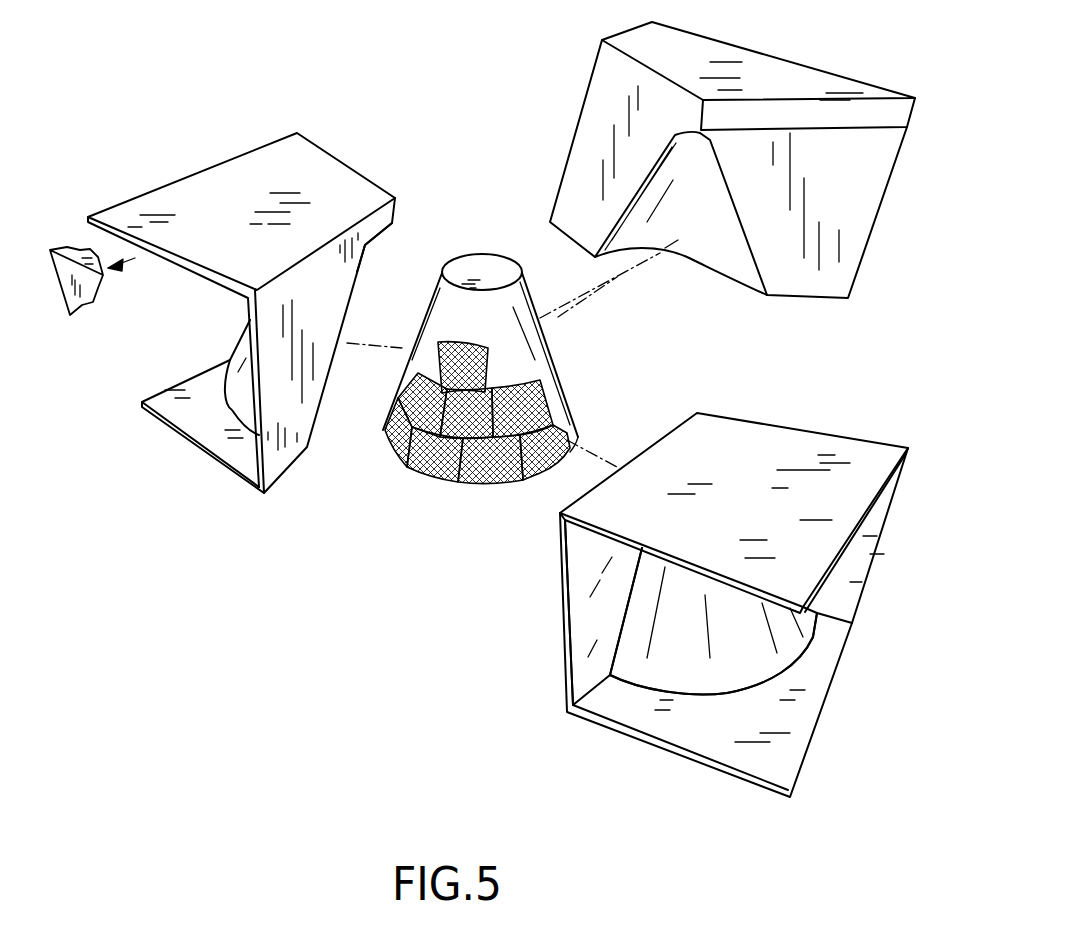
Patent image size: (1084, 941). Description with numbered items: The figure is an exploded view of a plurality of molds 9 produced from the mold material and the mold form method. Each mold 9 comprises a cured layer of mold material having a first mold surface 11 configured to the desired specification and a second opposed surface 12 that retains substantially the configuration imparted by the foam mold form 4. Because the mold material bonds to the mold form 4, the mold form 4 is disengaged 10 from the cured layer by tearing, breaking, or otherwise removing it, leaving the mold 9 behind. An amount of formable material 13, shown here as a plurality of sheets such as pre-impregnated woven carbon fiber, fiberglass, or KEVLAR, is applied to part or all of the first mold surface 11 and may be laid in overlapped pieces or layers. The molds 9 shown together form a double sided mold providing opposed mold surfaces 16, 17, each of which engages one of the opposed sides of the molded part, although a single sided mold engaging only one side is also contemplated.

The mold 9 is at (288, 132).
The mold form 4 is at (82, 307).
The disengagement of mold form 10 is at (135, 258).
The first mold surface 11 is at (420, 357).
The second opposed surface 12 is at (598, 630).
The formable material 13 is at (390, 450).
The opposed mold surface 16 is at (362, 267).
The opposed mold surface 17 is at (433, 297).